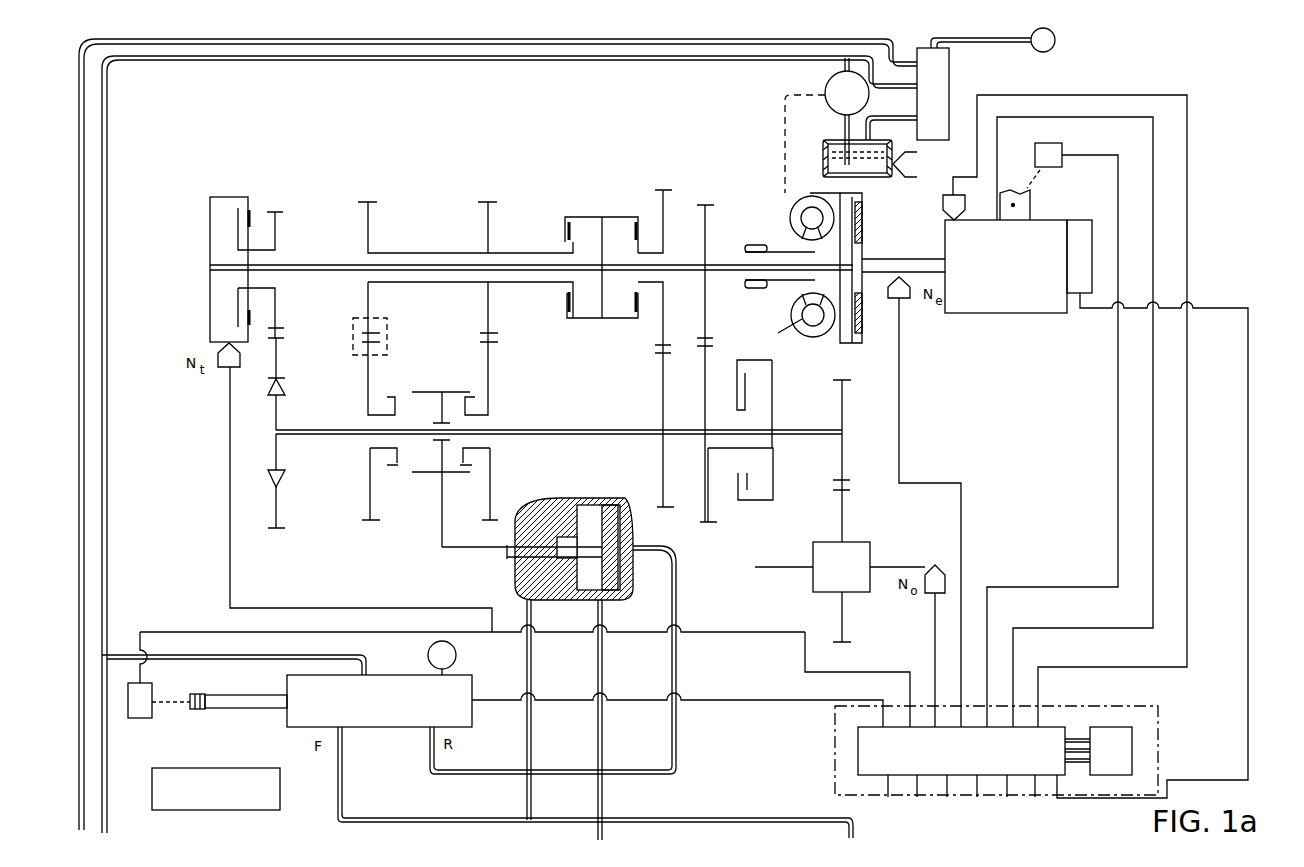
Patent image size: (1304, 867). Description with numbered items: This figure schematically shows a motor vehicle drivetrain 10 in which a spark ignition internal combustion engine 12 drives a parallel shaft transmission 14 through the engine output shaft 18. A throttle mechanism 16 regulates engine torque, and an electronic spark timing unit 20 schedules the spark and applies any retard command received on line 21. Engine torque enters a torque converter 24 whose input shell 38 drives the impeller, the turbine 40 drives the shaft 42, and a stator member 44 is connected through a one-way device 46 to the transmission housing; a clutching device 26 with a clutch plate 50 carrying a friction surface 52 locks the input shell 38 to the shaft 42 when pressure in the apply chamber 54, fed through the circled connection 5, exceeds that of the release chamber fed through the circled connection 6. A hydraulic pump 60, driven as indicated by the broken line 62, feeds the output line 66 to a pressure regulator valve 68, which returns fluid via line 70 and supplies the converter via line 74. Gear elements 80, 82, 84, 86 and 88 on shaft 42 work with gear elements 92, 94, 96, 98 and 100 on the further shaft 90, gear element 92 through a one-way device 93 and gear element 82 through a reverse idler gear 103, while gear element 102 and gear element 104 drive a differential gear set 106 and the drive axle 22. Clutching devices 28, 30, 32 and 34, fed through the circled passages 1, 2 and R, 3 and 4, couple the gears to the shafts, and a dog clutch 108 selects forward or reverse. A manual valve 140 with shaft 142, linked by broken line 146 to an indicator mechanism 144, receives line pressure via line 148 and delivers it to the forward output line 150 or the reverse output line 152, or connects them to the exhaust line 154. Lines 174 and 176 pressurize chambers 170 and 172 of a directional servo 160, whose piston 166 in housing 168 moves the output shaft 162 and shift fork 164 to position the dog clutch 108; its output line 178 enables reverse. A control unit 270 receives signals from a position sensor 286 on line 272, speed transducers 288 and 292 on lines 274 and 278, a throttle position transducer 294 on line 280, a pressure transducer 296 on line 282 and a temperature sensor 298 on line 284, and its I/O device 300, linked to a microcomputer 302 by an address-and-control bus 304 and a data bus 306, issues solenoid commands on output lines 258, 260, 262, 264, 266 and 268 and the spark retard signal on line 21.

The motor vehicle drivetrain 10 is at (297, 137).
The internal combustion engine 12 is at (1017, 300).
The parallel shaft transmission 14 is at (188, 300).
The throttle mechanism 16 is at (1031, 202).
The engine output shaft 18 is at (917, 262).
The electronic spark timing unit 20 is at (1097, 262).
The spark retard command line 21 is at (1250, 388).
The drive axle 22 is at (915, 566).
The torque converter 24 is at (773, 155).
The clutching device 26 is at (870, 222).
The clutching device 28 is at (208, 245).
The clutching device 30 is at (567, 217).
The clutching device 32 is at (775, 445).
The clutching device 34 is at (625, 217).
The input shell 38 is at (820, 340).
The turbine 40 is at (794, 318).
The transmission shaft 42 is at (722, 260).
The stator member 44 is at (790, 287).
The one-way device 46 is at (807, 252).
The clutch plate 50 is at (851, 343).
The friction surface 52 is at (862, 323).
The apply chamber 54 is at (863, 282).
The hydraulic pump 60 is at (824, 85).
The broken line 62 is at (785, 125).
The pump output line 66 is at (627, 60).
The pressure regulator valve 68 is at (950, 93).
The return line 70 is at (915, 117).
The line 74 is at (391, 42).
The gear element 80 is at (277, 242).
The gear element 82 is at (369, 227).
The gear element 84 is at (488, 220).
The gear element 86 is at (668, 215).
The gear element 88 is at (707, 230).
The transmission shaft 90 is at (525, 431).
The gear element 92 is at (275, 480).
The one-way device 93 is at (286, 385).
The gear element 94 is at (370, 478).
The gear element 96 is at (490, 493).
The gear element 98 is at (665, 452).
The gear element 100 is at (700, 522).
The gear element 102 is at (843, 455).
The reverse idler gear 103 is at (390, 328).
The gear element 104 is at (843, 523).
The differential gear set 106 is at (870, 560).
The dog clutch 108 is at (437, 452).
The manual valve 140 is at (392, 715).
The shaft 142 is at (253, 698).
The indicator mechanism 144 is at (280, 783).
The broken line 146 is at (247, 712).
The input line 148 is at (258, 655).
The forward output line 150 is at (343, 792).
The reverse output line 152 is at (460, 772).
The exhaust line 154 is at (440, 670).
The directional servo 160 is at (508, 565).
The output shaft 162 is at (509, 535).
The shift fork 164 is at (440, 510).
The piston 166 is at (570, 507).
The servo housing 168 is at (516, 582).
The chamber 170 is at (552, 507).
The chamber 172 is at (610, 522).
The line 174 is at (532, 710).
The line 176 is at (677, 720).
The output line 178 is at (604, 640).
The output line 258 is at (886, 790).
The output line 260 is at (917, 797).
The output line 262 is at (947, 797).
The output line 264 is at (977, 797).
The output line 266 is at (1007, 797).
The output line 268 is at (1035, 797).
The control unit 270 is at (1162, 752).
The input line 272 is at (805, 648).
The input line 274 is at (853, 672).
The input line 278 is at (962, 510).
The input line 280 is at (1117, 455).
The input line 282 is at (1150, 323).
The input line 284 is at (1190, 360).
The position sensor 286 is at (152, 687).
The speed transducer 288 is at (224, 368).
The speed transducer 292 is at (903, 300).
The position transducer 294 is at (1062, 148).
The pressure transducer 296 is at (957, 200).
The temperature sensor 298 is at (911, 165).
The input/output device 300 is at (858, 750).
The microcomputer 302 is at (1118, 730).
The address-and-control bus 304 is at (1077, 740).
The bi-directional data bus 306 is at (1110, 770).
The circled numeral 1 is at (222, 222).
The circled numeral 2 is at (572, 108).
The circled numeral 3 is at (760, 500).
The circled numeral 4 is at (617, 230).
The circled numeral 5 is at (813, 337).
The circled numeral 6 is at (862, 242).
The circled letter R is at (587, 233).